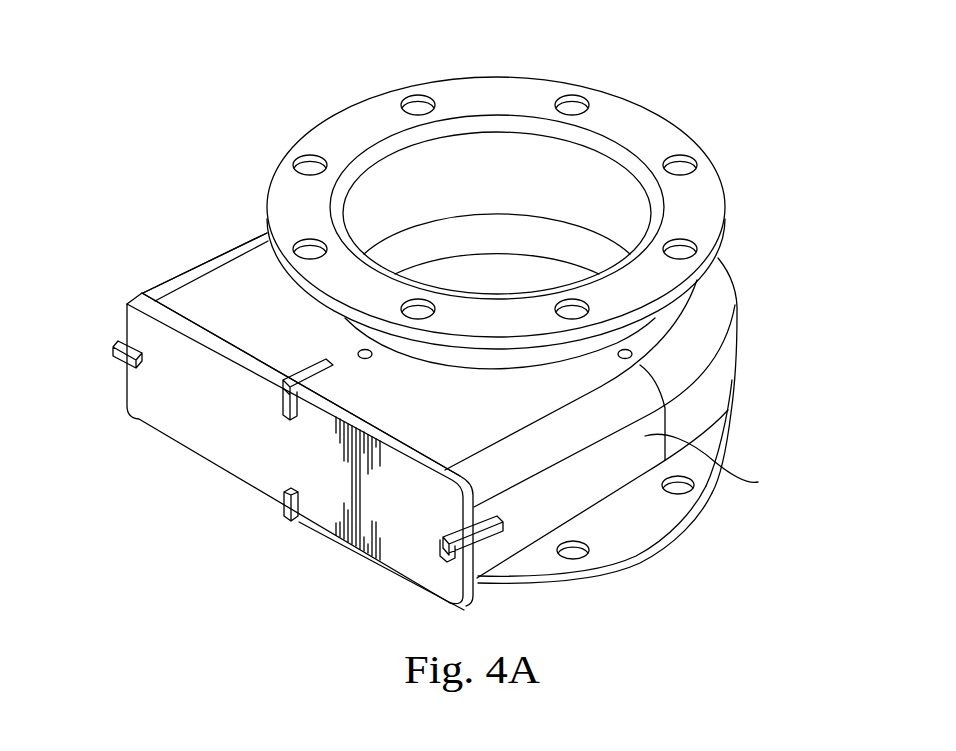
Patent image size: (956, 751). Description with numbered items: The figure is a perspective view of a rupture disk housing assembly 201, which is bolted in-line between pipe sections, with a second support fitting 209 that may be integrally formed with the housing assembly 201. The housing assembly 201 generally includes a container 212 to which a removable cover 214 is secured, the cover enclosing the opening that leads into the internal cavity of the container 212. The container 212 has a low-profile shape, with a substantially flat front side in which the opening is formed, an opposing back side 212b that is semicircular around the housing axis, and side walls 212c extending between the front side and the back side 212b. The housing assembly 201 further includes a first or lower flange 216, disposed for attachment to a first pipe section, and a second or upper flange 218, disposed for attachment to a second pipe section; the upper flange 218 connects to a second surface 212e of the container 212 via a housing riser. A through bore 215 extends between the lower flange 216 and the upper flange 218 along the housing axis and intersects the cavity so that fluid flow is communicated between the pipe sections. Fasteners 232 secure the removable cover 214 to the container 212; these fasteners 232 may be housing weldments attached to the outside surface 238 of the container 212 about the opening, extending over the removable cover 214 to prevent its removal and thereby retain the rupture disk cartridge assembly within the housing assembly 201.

The rupture disk housing assembly 201 is at (322, 55).
The second support fitting 209 is at (206, 262).
The container 212 is at (244, 231).
The back side 212b is at (737, 298).
The side walls 212c is at (766, 472).
The second surface 212e is at (477, 442).
The removable cover 214 is at (247, 492).
The through bore 215 is at (500, 268).
The first or lower flange 216 is at (668, 565).
The second or upper flange 218 is at (630, 94).
The fasteners 232 is at (113, 349).
The outside surface 238 is at (200, 297).